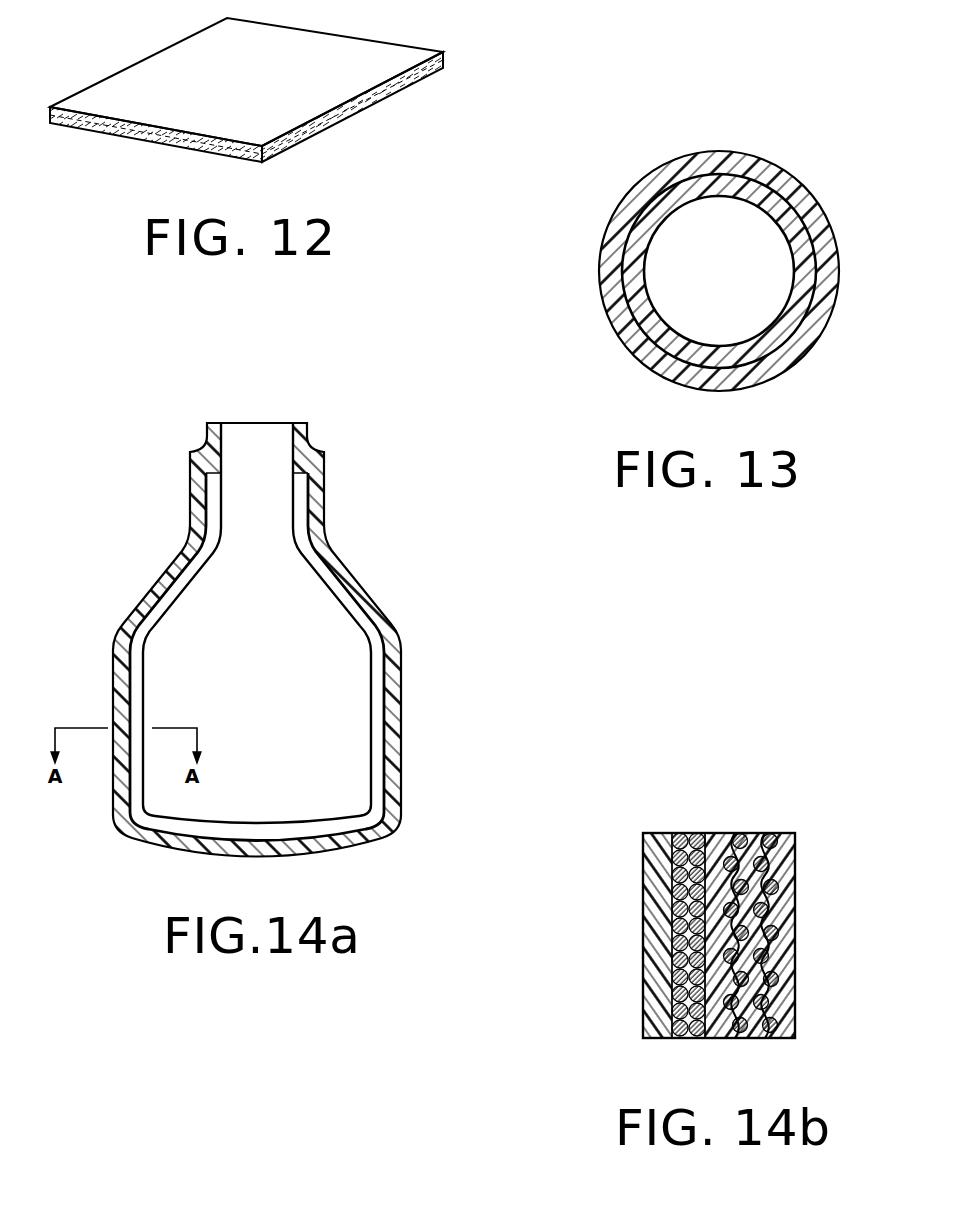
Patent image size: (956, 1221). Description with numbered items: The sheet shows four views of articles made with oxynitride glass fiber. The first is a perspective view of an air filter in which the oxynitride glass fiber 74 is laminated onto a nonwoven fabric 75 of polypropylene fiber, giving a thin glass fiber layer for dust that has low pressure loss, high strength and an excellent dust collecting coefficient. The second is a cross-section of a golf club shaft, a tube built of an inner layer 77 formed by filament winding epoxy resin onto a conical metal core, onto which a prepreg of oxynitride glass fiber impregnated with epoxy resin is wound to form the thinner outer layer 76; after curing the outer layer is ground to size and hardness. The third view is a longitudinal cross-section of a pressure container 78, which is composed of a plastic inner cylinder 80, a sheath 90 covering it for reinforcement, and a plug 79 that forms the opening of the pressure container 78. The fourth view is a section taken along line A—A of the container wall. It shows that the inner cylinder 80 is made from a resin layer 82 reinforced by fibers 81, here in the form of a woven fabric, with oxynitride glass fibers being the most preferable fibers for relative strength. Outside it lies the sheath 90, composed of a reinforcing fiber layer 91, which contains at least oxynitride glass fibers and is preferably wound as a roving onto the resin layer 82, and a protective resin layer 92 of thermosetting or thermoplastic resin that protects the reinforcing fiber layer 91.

In FIG. 12, the oxynitride glass fiber 74 is at (267, 81).
In FIG. 12, the nonwoven fabric 75 is at (446, 70).
In FIG. 13, the outer layer 76 is at (720, 257).
In FIG. 13, the inner layer 77 is at (681, 271).
In FIG. 14a, the pressure container 78 is at (291, 628).
In FIG. 14a, the plug 79 is at (290, 406).
In FIG. 14a, the inner cylinder 80 is at (302, 632).
In FIG. 14a, the sheath 90 is at (291, 645).
In FIG. 14b, the reinforcing fiber layer 91 is at (680, 833).
In FIG. 14b, the protective resin layer 92 is at (623, 935).
In FIG. 14b, the resin layer 82 is at (778, 960).
In FIG. 14b, the fibers 81 is at (731, 1038).